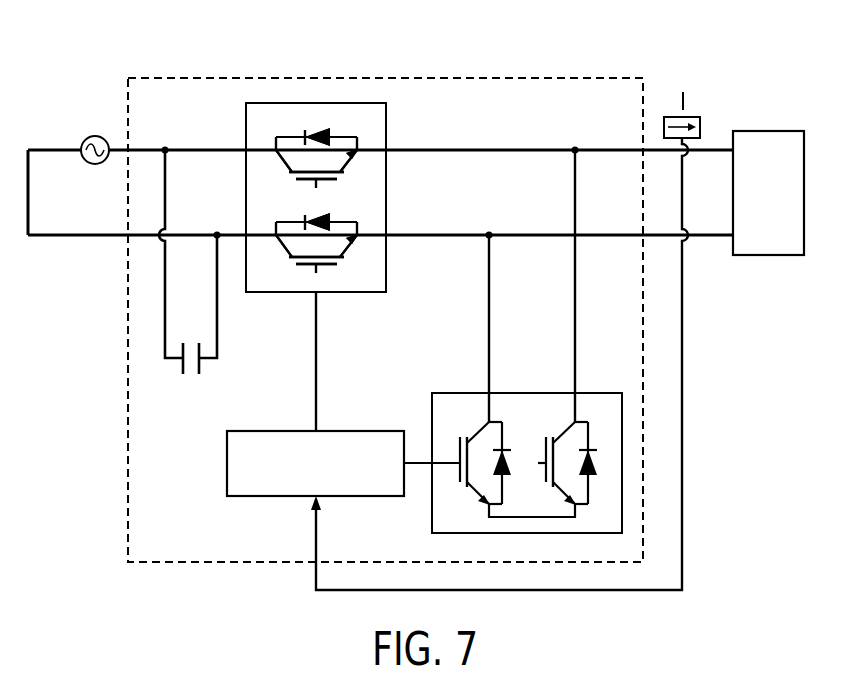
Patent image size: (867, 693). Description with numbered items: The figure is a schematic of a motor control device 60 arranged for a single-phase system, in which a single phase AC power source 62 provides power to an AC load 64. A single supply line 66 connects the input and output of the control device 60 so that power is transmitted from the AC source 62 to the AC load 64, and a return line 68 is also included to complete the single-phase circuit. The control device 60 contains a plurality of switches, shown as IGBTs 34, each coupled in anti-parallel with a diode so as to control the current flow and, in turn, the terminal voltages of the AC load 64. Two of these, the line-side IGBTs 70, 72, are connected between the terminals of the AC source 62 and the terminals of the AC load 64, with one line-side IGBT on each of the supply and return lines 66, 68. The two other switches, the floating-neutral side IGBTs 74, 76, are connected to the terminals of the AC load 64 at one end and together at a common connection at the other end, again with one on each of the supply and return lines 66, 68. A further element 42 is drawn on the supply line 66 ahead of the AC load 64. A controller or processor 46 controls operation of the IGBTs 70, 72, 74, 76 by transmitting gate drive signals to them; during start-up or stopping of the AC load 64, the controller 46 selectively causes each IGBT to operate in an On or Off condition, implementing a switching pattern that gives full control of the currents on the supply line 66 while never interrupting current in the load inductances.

The motor control device 60 is at (540, 59).
The single phase AC power source 62 is at (68, 129).
The AC load 64 is at (768, 131).
The current sensor 42 is at (701, 126).
The supply line 66 is at (422, 150).
The return line 68 is at (422, 235).
The switch (IGBT with antiparallel diode) 34 is at (305, 134).
The line-side IGBT 70 is at (290, 176).
The line-side IGBT 72 is at (291, 262).
The controller or processor 46 is at (227, 468).
The floating-neutral side IGBT 74 is at (548, 437).
The floating-neutral side IGBT 76 is at (462, 437).